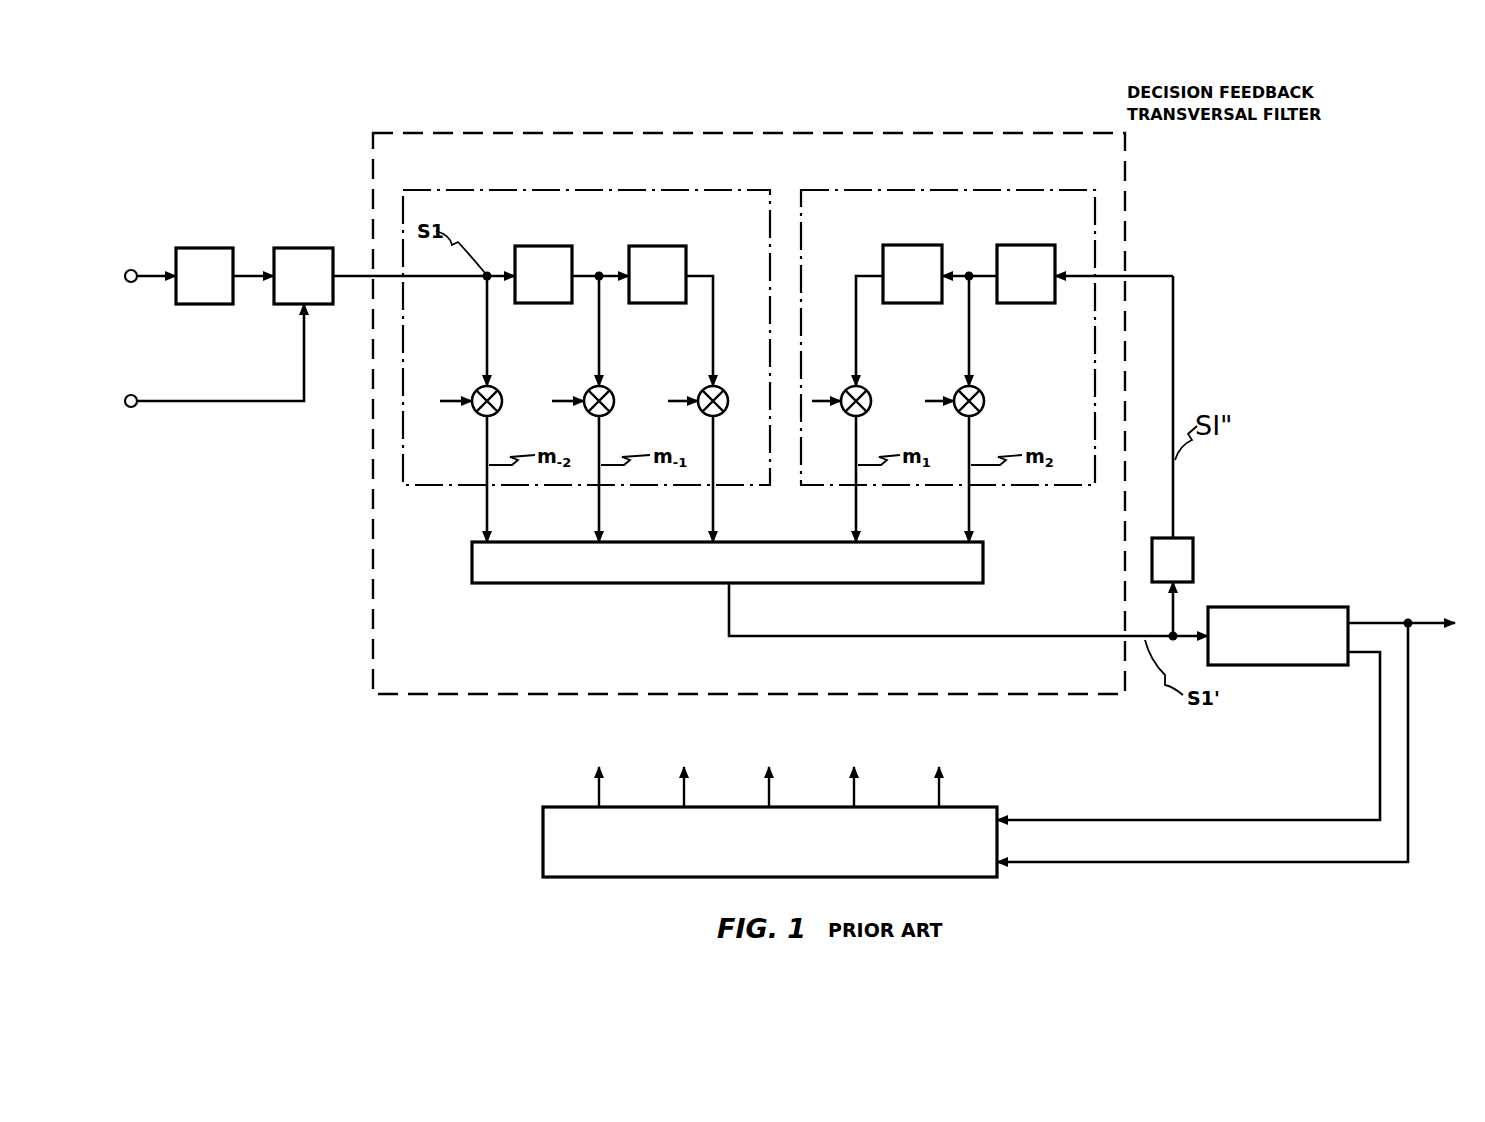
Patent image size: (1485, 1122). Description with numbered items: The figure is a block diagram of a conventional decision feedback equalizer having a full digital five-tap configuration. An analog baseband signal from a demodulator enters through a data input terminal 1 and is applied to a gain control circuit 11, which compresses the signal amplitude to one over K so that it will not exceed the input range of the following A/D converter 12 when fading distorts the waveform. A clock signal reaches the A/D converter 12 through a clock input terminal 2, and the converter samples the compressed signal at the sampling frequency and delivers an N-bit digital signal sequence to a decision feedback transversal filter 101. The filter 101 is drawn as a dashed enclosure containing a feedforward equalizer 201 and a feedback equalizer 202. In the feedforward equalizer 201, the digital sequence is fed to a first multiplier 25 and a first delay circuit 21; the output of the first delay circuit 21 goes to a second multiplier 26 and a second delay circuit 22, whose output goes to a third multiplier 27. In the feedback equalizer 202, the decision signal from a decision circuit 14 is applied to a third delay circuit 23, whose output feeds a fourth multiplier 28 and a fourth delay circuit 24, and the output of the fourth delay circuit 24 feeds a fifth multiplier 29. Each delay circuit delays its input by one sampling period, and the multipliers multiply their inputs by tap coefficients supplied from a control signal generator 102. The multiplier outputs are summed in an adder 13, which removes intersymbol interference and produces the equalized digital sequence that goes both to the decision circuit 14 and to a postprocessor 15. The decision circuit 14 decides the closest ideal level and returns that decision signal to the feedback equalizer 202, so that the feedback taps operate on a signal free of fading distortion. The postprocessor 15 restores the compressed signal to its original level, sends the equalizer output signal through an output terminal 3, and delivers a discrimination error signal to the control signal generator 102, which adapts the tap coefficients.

The data input terminal 1 is at (133, 283).
The clock input terminal 2 is at (133, 408).
The output terminal 3 is at (1410, 620).
The gain control circuit 11 is at (205, 248).
The A/D converter 12 is at (305, 248).
The adder 13 is at (620, 584).
The decision circuit 14 is at (1190, 538).
The postprocessor 15 is at (1280, 607).
The first delay circuit 21 is at (541, 246).
The second delay circuit 22 is at (660, 246).
The third delay circuit 23 is at (1026, 245).
The fourth delay circuit 24 is at (910, 245).
The first multiplier 25 is at (478, 392).
The second multiplier 26 is at (590, 392).
The third multiplier 27 is at (704, 392).
The fourth multiplier 28 is at (980, 391).
The fifth multiplier 29 is at (866, 391).
The decision feedback transversal filter 101 is at (1018, 131).
The control signal generator 102 is at (543, 847).
The feedforward equalizer 201 is at (640, 189).
The feedback equalizer 202 is at (940, 189).